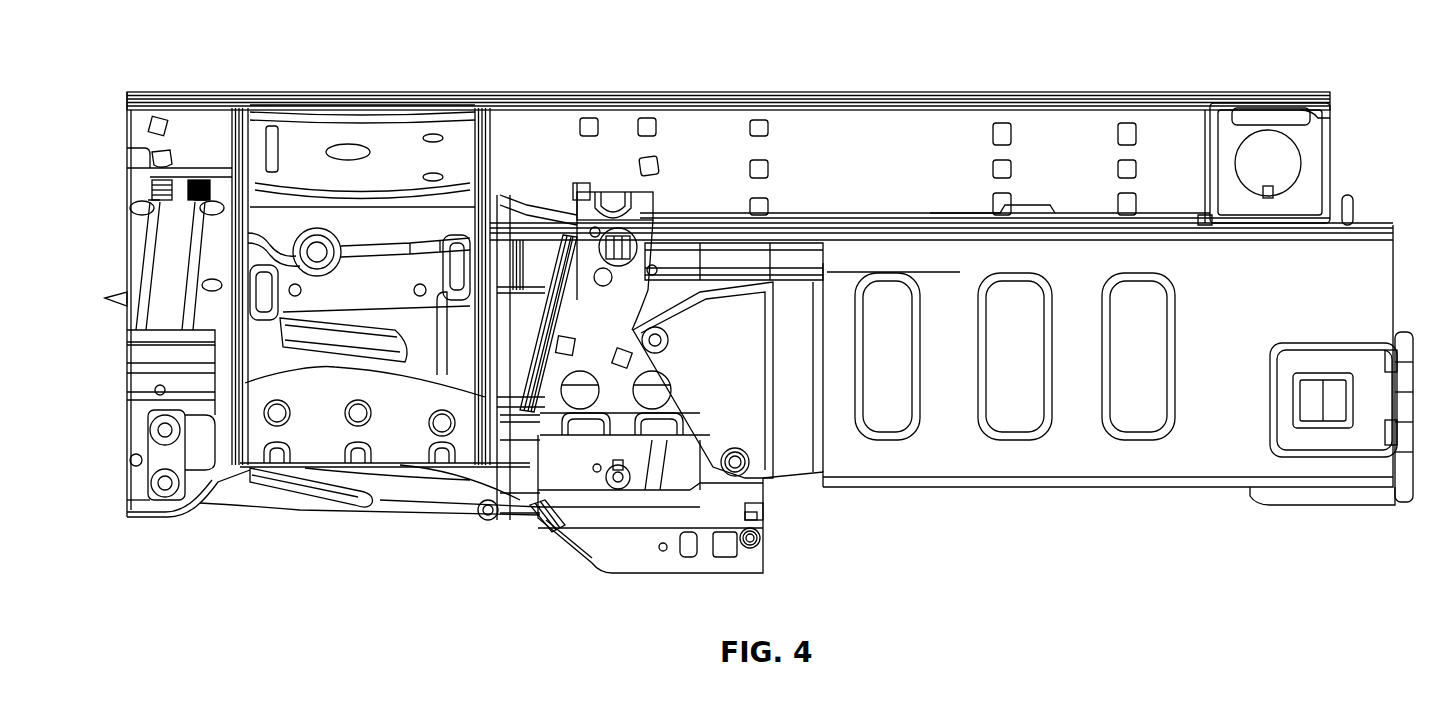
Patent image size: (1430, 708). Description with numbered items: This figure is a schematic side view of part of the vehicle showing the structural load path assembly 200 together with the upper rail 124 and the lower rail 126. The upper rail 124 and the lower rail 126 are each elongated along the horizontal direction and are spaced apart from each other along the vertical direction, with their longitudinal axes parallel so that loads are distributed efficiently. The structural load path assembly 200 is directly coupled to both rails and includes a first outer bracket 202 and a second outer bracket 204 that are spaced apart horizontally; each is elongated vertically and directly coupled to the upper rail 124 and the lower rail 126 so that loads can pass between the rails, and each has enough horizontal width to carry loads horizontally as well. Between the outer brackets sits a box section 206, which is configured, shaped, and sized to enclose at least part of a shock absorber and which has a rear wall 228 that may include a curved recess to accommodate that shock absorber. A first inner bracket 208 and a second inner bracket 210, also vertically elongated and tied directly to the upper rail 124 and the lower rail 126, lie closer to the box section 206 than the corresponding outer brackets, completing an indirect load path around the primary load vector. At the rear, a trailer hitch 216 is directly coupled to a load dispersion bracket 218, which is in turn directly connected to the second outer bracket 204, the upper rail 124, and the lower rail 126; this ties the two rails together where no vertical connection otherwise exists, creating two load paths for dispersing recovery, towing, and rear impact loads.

The upper rail 124 is at (853, 172).
The lower rail 126 is at (538, 498).
The structural load path assembly 200 is at (522, 140).
The first outer bracket 202 is at (130, 228).
The second outer bracket 204 is at (639, 282).
The box section 206 is at (425, 85).
The first inner bracket 208 is at (215, 448).
The second inner bracket 210 is at (488, 512).
The trailer hitch 216 is at (1390, 420).
The load dispersion bracket 218 is at (1372, 225).
The rear wall 228 is at (323, 232).